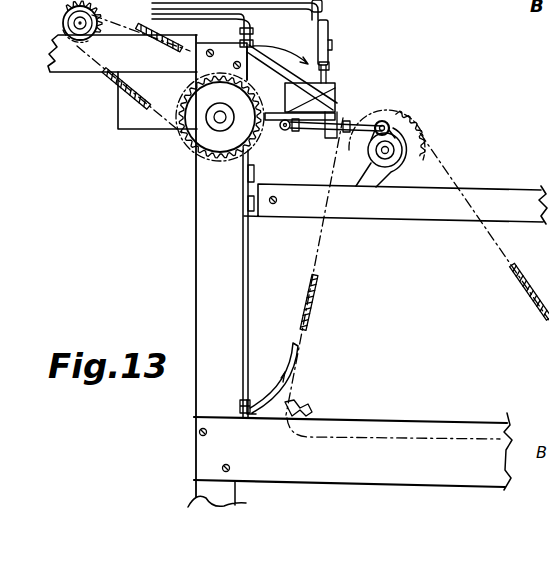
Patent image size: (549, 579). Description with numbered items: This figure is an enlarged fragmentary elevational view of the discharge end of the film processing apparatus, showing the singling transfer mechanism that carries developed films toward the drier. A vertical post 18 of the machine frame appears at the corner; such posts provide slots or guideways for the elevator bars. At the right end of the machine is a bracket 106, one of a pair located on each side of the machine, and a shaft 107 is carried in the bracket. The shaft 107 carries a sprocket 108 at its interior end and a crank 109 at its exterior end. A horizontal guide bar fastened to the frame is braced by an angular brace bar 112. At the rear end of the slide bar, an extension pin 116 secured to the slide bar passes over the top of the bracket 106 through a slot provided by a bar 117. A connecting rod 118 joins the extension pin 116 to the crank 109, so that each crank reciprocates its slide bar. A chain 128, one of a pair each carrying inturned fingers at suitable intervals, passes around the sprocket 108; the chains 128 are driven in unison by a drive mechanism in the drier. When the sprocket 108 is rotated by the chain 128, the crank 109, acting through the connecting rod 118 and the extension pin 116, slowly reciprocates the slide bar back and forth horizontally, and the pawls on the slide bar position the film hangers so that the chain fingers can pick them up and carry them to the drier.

The vertical post 18 is at (202, 298).
The bracket 106 is at (372, 181).
The shaft 107 is at (398, 146).
The sprocket 108 is at (418, 124).
The crank 109 is at (377, 145).
The angular brace bar 112 is at (323, 73).
The extension pin 116 is at (284, 131).
The bar 117 is at (333, 107).
The connecting rod 118 is at (323, 131).
The chain 128 is at (318, 303).